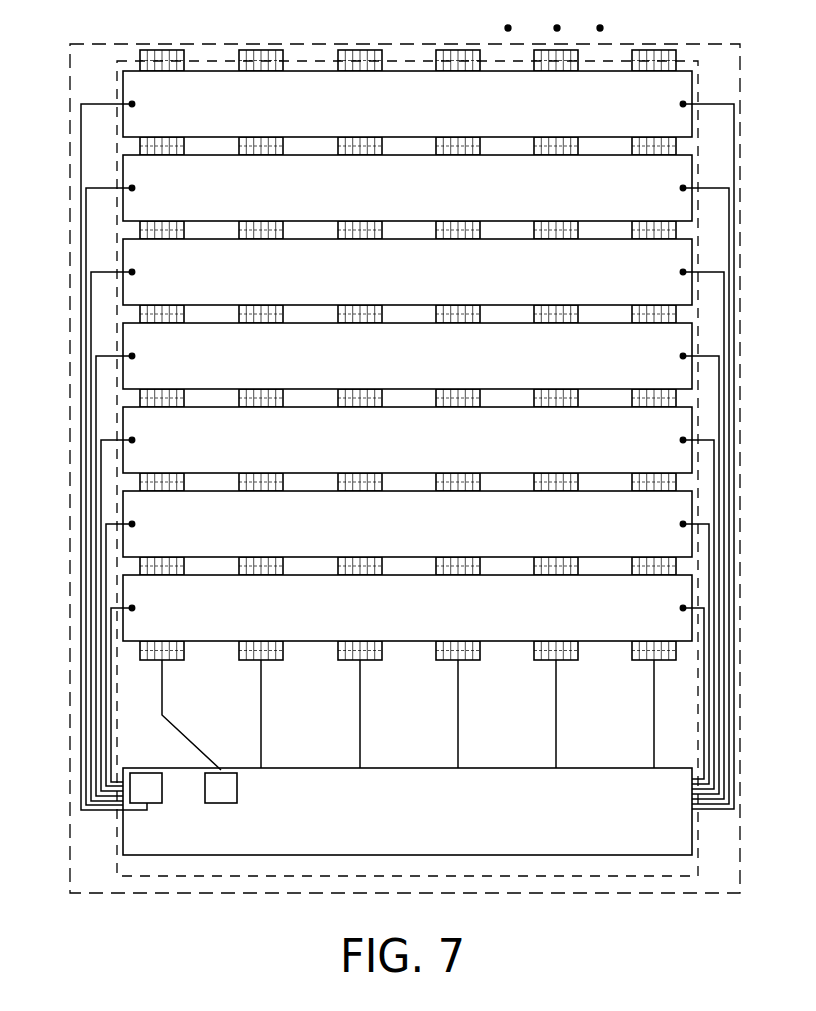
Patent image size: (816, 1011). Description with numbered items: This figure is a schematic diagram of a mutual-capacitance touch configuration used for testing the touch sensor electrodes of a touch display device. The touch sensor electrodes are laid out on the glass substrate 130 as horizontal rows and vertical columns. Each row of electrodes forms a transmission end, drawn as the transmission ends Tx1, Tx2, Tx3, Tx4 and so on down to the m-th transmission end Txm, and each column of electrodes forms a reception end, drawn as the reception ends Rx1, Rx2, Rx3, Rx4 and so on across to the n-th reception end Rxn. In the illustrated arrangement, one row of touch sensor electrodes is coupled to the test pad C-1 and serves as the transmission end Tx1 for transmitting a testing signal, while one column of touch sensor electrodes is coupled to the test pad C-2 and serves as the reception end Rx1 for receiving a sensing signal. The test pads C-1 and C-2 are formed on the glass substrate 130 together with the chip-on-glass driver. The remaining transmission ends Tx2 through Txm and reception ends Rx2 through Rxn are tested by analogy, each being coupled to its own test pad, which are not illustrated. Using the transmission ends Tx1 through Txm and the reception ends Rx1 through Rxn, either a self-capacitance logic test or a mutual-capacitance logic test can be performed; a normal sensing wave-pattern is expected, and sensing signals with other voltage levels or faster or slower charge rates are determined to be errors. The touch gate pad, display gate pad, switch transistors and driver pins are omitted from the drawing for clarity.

The glass substrate 130 is at (305, 768).
The test pad C-1 is at (147, 768).
The test pad C-2 is at (228, 768).
The transmission end Tx1 is at (384, 440).
The transmission end Tx2 is at (382, 480).
The transmission end Tx3 is at (379, 520).
The transmission end Tx4 is at (377, 559).
The transmission end Txm is at (369, 678).
The reception end Rx1 is at (184, 392).
The reception end Rx2 is at (262, 391).
The reception end Rx3 is at (361, 391).
The reception end Rx4 is at (458, 391).
The reception end Rxn is at (656, 391).